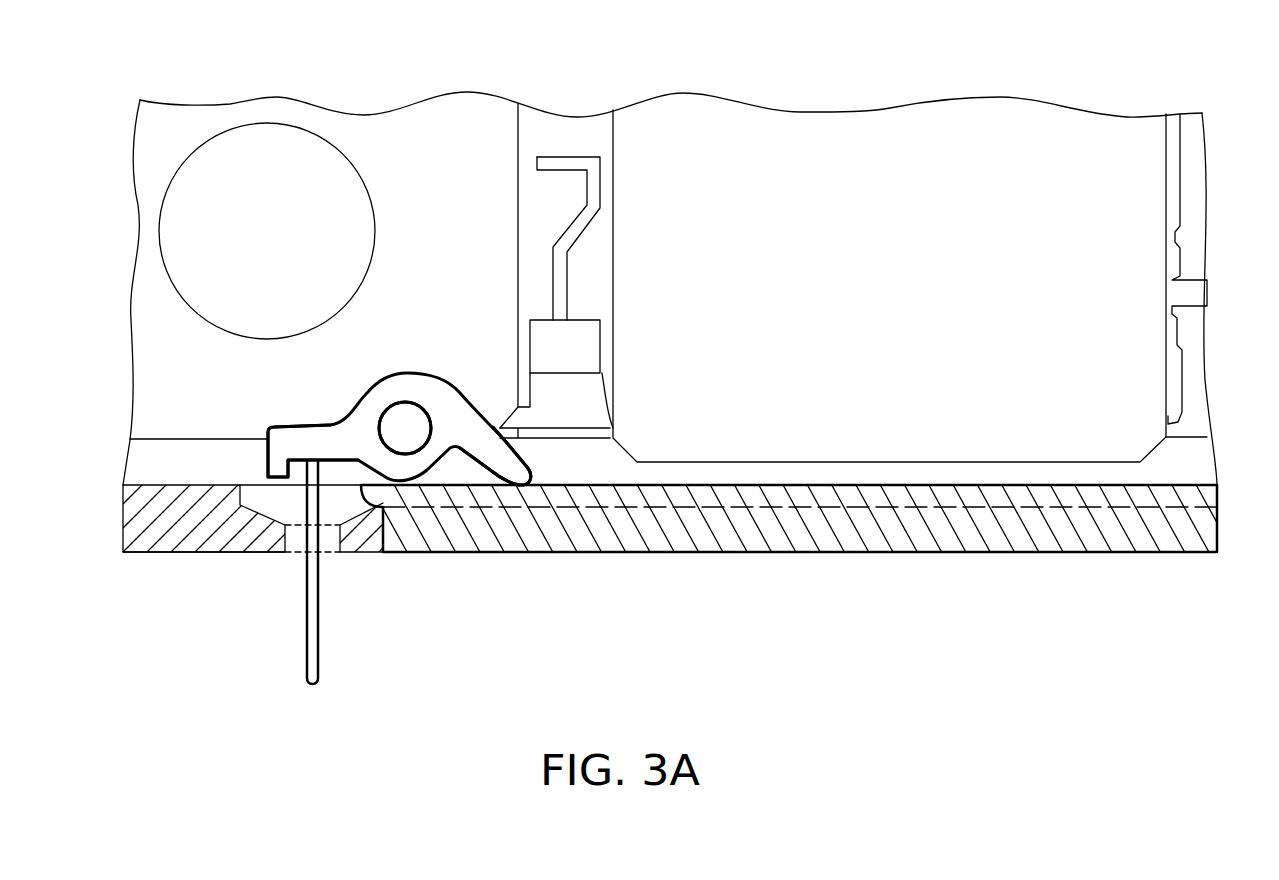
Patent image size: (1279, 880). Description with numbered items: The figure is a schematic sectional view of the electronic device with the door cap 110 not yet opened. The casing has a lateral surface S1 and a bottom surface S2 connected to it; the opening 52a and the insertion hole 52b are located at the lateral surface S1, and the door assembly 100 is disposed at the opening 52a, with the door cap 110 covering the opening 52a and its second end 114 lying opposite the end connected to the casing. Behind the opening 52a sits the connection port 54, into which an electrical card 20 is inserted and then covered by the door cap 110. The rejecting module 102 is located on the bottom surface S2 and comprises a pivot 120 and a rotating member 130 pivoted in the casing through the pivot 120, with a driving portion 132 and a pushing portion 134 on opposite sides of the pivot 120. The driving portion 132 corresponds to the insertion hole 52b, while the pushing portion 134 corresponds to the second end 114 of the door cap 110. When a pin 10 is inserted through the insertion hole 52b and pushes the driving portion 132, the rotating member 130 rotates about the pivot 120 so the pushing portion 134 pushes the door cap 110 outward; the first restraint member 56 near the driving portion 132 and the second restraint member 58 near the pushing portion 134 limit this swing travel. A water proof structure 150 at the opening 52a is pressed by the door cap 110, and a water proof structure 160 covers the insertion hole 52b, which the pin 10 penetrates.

The pin 10 is at (311, 667).
The electrical card 20 is at (1003, 128).
The opening 52a is at (399, 534).
The insertion hole 52b is at (298, 533).
The connection port 54 is at (1168, 187).
The first restraint member 56 is at (272, 150).
The second restraint member 58 is at (587, 343).
The door assembly 100 is at (472, 634).
The rejecting module 102 is at (421, 358).
The door cap 110 is at (777, 535).
The second end 114 is at (417, 534).
The pivot 120 is at (412, 435).
The rotating member 130 is at (365, 418).
The driving portion 132 is at (281, 450).
The pushing portion 134 is at (515, 470).
The water proof structure 150 is at (663, 500).
The water proof structure 160 is at (333, 553).
The lateral surface S1 is at (185, 556).
The bottom surface S2 is at (182, 468).